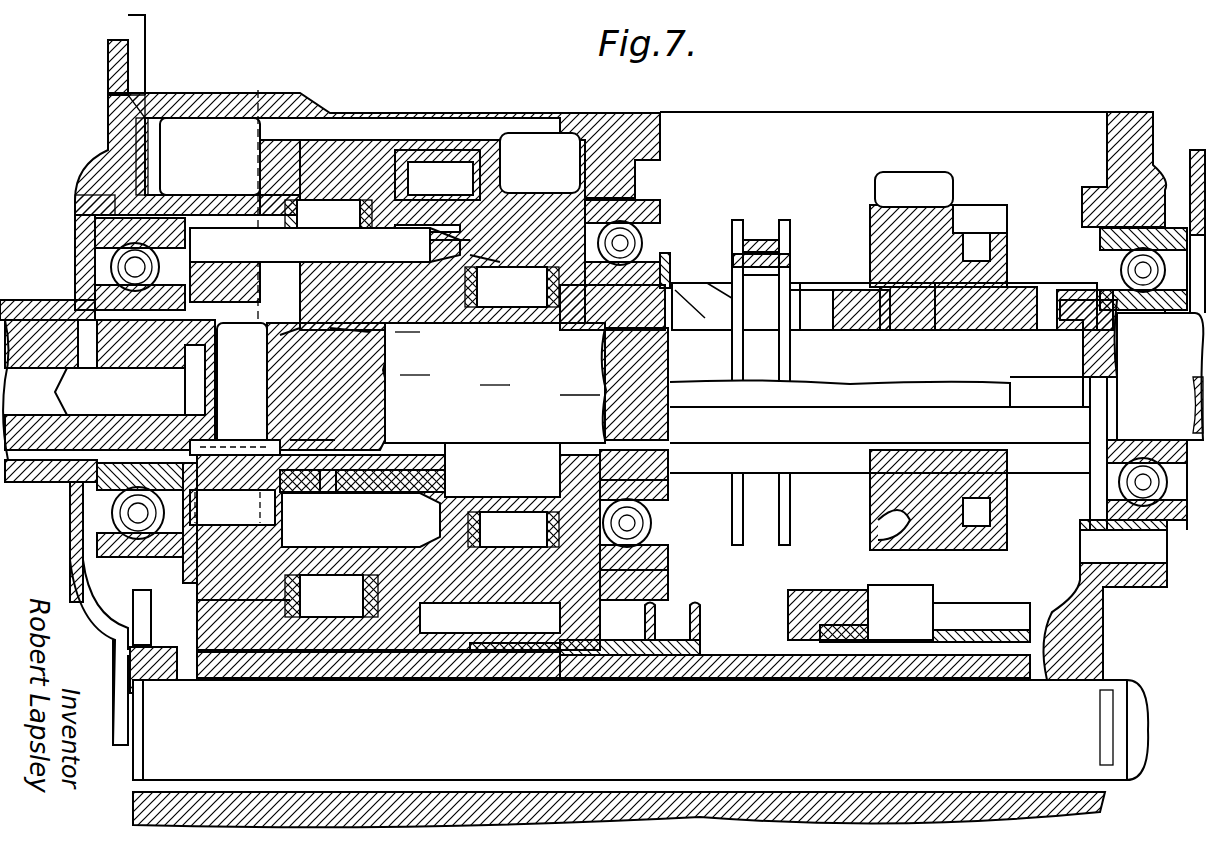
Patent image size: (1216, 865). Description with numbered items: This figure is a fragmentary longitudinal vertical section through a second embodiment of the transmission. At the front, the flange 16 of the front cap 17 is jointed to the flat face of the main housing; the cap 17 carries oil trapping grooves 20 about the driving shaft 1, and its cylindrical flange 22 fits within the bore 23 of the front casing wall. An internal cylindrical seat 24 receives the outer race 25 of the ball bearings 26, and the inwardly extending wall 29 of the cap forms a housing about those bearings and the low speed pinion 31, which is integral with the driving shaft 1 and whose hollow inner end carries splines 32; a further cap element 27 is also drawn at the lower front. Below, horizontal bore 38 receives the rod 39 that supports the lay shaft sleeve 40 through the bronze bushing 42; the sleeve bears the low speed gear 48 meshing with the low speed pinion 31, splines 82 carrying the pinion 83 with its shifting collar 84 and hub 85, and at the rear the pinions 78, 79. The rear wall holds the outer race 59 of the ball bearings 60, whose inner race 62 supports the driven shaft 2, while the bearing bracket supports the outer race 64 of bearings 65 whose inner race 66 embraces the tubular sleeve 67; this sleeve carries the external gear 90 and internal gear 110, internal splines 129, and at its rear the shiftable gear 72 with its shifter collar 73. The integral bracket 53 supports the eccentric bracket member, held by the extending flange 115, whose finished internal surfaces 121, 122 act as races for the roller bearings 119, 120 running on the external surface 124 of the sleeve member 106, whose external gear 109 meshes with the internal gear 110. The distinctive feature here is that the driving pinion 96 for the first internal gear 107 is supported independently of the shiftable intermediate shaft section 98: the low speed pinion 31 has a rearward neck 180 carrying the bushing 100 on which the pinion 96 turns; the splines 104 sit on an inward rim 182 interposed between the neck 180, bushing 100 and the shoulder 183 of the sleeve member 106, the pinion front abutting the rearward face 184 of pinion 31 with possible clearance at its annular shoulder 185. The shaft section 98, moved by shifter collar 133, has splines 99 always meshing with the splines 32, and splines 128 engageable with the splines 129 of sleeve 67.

The driving shaft 1 is at (140, 365).
The driven shaft 2 is at (1125, 352).
The flange 16 is at (115, 70).
The front cap 17 is at (75, 270).
The oil trapping grooves 20 is at (15, 310).
The cylindrical flange 22 is at (142, 140).
The bore 23 is at (135, 128).
The internal cylindrical seat 24 is at (110, 215).
The outer race 25 is at (142, 575).
The ball bearings 26 is at (138, 558).
The lower bearing cap 27 is at (85, 505).
The inwardly extending wall 29 is at (175, 200).
The low speed pinion 31 is at (222, 262).
The splines 32 is at (345, 440).
The horizontal bore 38 is at (160, 695).
The rod or shaft 39 is at (1142, 716).
The lay shaft sleeve 40 is at (640, 670).
The bronze bushing 42 is at (290, 672).
The low speed gear 48 is at (240, 665).
The integral bracket 53 is at (360, 655).
The outer race 59 is at (1125, 242).
The ball bearings 60 is at (1140, 270).
The inner race 62 is at (1110, 440).
The outer race 64 is at (650, 205).
The bearings 65 is at (640, 240).
The inner race 66 is at (672, 270).
The tubular sleeve 67 is at (660, 270).
The shiftable gear 72 is at (880, 212).
The shifter collar 73 is at (1005, 512).
The pinion 78 is at (800, 604).
The pinion 79 is at (1000, 612).
The splines 82 is at (435, 665).
The pinion 83 is at (475, 660).
The shifting collar 84 is at (675, 620).
The hub 85 is at (565, 660).
The external gear 90 is at (540, 140).
The driving pinion 96 is at (358, 332).
The intermediate shaft section 98 is at (518, 435).
The splines 99 is at (306, 386).
The bushing 100 is at (350, 338).
The splines 104 is at (450, 345).
The sleeve member 106 is at (508, 330).
The first internal gear 107 is at (375, 530).
The external gear 109 is at (460, 232).
The internal gear 110 is at (430, 185).
The extending flange 115 is at (262, 105).
The roller bearings 119 is at (328, 221).
The roller bearings 120 is at (512, 287).
The internal surface 121 is at (265, 190).
The internal surface 122 is at (508, 262).
The external surface 124 is at (503, 378).
The splines 128 is at (608, 370).
The splines 129 is at (598, 325).
The shifter collar 133 is at (770, 505).
The neck 180 is at (242, 388).
The inwardly extending rim or flange 182 is at (438, 330).
The shoulder or abutment 183 is at (468, 238).
The rearwardly directed face 184 is at (250, 255).
The annular shoulder 185 is at (400, 470).